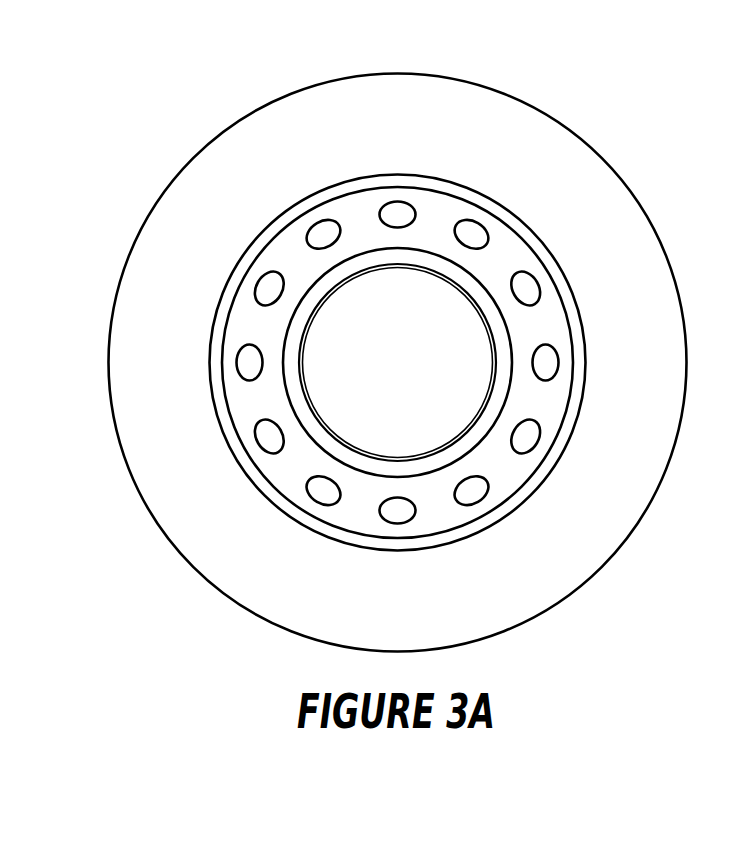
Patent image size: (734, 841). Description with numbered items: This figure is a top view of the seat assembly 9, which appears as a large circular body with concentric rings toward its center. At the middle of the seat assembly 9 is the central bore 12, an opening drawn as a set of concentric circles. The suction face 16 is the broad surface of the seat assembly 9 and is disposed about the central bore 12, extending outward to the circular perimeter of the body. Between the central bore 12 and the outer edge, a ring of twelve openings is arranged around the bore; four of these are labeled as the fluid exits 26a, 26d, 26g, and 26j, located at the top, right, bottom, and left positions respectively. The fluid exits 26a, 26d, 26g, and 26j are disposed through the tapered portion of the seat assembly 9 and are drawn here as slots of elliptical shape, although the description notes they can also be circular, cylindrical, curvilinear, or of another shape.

The seat assembly 9 is at (189, 95).
The central bore 12 is at (444, 312).
The suction face 16 is at (566, 554).
The fluid exit 26a is at (398, 210).
The fluid exit 26d is at (551, 363).
The fluid exit 26g is at (397, 518).
The fluid exit 26j is at (246, 363).